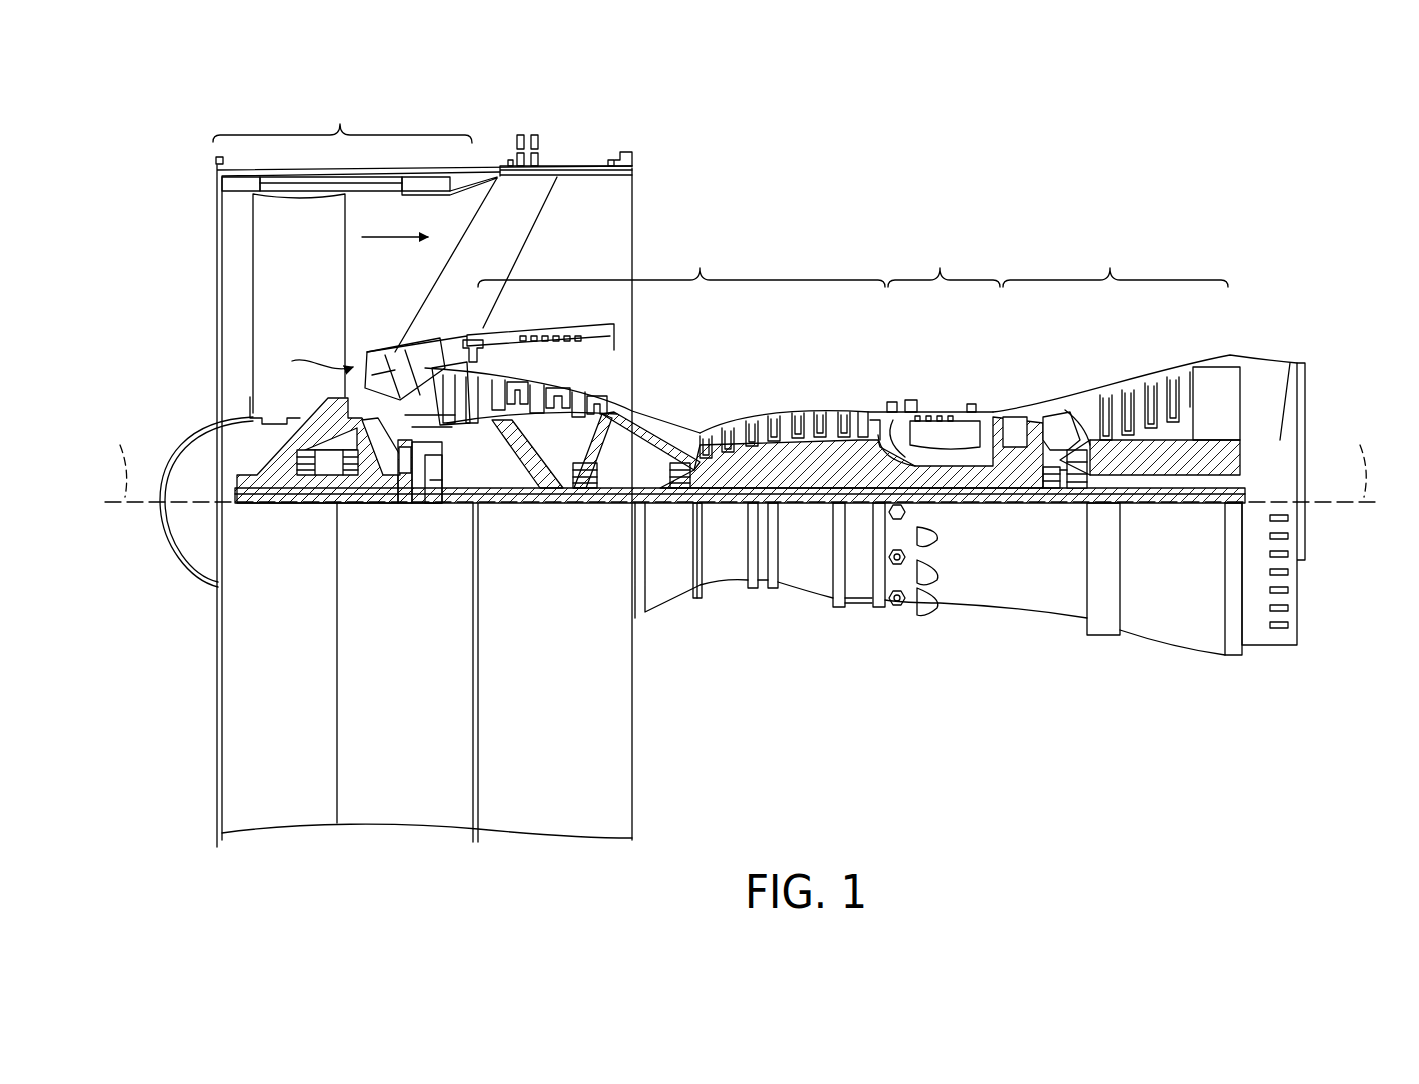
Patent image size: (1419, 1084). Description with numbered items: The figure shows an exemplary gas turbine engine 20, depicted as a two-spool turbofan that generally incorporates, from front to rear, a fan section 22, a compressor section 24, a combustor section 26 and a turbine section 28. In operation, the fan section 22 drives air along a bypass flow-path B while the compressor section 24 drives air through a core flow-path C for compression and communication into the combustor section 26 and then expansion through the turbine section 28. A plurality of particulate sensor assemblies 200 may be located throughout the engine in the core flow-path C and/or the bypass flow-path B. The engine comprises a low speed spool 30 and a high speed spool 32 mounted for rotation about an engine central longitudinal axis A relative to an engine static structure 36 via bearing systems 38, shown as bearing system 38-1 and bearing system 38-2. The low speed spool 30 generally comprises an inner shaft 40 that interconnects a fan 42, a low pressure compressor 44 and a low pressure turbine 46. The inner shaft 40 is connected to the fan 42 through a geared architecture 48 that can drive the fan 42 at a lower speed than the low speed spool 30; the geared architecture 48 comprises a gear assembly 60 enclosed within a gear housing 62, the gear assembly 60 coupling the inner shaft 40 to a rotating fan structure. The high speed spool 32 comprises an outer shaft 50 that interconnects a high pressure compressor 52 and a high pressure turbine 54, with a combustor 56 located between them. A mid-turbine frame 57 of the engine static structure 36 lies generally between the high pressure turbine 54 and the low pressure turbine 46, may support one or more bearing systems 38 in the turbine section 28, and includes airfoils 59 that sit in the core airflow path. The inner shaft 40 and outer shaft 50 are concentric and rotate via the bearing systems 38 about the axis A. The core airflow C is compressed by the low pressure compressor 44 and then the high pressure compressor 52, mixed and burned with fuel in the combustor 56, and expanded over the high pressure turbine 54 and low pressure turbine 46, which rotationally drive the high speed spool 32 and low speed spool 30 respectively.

The gas turbine engine 20 is at (1000, 198).
The fan section 22 is at (385, 220).
The compressor section 24 is at (681, 263).
The combustor section 26 is at (944, 262).
The turbine section 28 is at (1115, 262).
The low speed spool 30 is at (811, 510).
The high speed spool 32 is at (857, 465).
The engine static structure 36 is at (200, 833).
The bearing system 38 is at (1060, 498).
The bearing system 38-1 is at (312, 480).
The bearing system 38-2 is at (583, 505).
The inner shaft 40 is at (657, 506).
The fan 42 is at (320, 304).
The low pressure compressor 44 is at (562, 390).
The low pressure turbine 46 is at (1160, 382).
The geared architecture 48 is at (437, 520).
The outer shaft 50 is at (935, 490).
The high pressure compressor 52 is at (792, 468).
The high pressure turbine 54 is at (1016, 415).
The combustor 56 is at (935, 435).
The mid-turbine frame 57 is at (1052, 440).
The airfoils 59 is at (1078, 450).
The gear assembly 60 is at (444, 483).
The gear housing 62 is at (444, 453).
The particulate sensor assembly 200 is at (198, 181).
The engine central longitudinal axis A is at (735, 458).
The bypass flow-path B is at (395, 223).
The core flow-path C is at (310, 362).